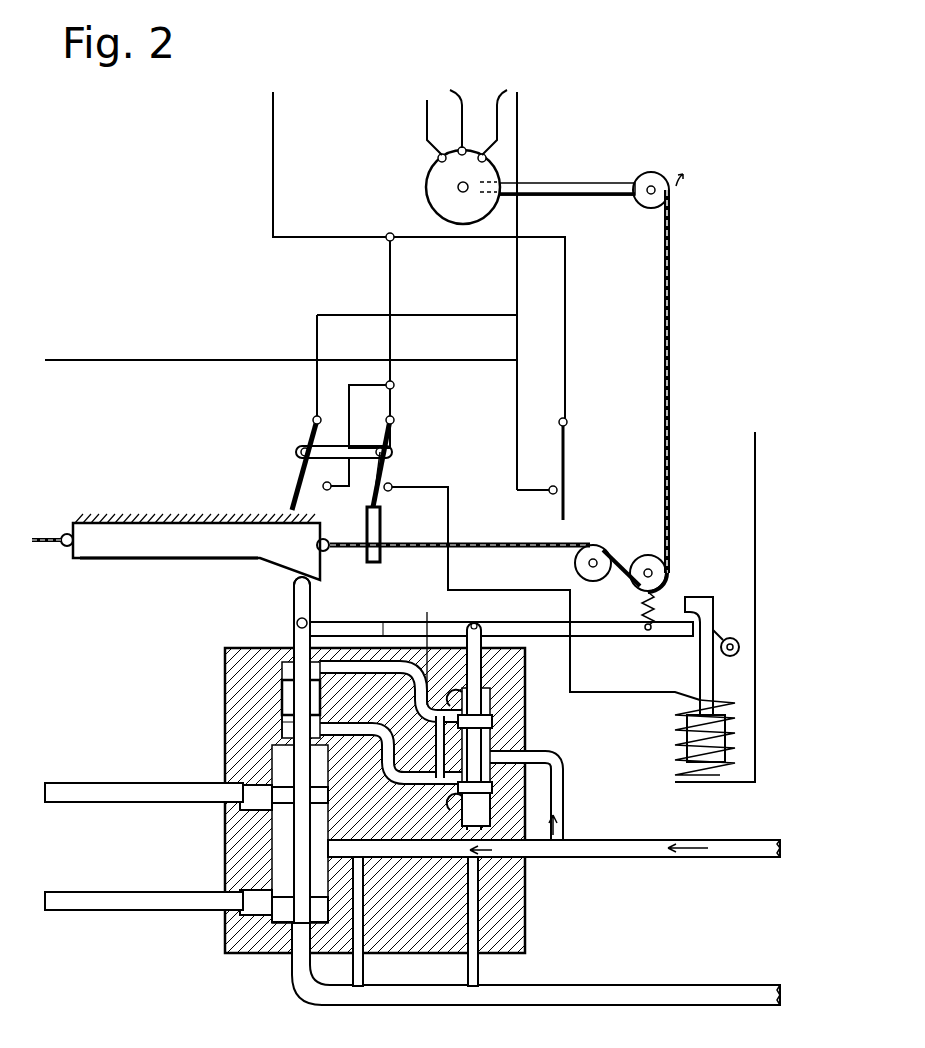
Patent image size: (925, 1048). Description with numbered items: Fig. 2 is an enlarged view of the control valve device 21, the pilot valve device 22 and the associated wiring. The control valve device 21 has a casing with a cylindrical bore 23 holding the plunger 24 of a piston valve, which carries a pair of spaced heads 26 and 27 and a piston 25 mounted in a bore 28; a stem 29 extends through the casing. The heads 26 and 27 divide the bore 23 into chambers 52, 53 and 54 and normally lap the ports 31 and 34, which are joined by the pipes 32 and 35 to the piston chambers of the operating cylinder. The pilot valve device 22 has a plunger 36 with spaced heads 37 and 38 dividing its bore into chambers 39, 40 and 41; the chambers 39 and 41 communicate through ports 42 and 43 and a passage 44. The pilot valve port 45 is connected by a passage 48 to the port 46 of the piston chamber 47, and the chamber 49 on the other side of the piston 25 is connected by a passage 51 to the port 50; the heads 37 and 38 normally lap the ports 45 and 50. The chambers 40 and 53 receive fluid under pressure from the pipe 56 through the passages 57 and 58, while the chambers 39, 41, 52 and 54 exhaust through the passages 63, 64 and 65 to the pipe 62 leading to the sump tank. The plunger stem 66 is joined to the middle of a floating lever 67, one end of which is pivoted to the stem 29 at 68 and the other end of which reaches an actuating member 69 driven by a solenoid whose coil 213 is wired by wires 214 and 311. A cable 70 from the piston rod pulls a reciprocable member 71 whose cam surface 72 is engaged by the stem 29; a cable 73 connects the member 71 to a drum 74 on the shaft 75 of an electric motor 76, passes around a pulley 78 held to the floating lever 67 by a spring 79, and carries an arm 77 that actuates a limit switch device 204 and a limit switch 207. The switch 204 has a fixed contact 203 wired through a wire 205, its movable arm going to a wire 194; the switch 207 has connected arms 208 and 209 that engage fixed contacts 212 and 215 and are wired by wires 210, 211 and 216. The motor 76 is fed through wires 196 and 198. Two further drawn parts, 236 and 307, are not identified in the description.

The wire 196 is at (440, 105).
The conductor 236 is at (501, 108).
The wire 198 is at (427, 120).
The wire 211 is at (517, 120).
The wire 194 is at (273, 190).
The electric motor 76 is at (426, 185).
The shaft 75 is at (580, 183).
The drum 74 is at (651, 172).
The cable 73 is at (670, 363).
The wire 210 is at (390, 282).
The wire 205 is at (246, 360).
The wire 216 is at (366, 390).
The limit switch 207 is at (383, 450).
The switch arm 208 is at (376, 480).
The switch arm 209 is at (298, 493).
The fixed contact 215 is at (333, 490).
The fixed contact 212 is at (391, 491).
The limit switch device 204 is at (563, 470).
The fixed contact 203 is at (553, 494).
The reciprocable member 71 is at (172, 528).
The cable 70 is at (48, 546).
The cam surface 72 is at (182, 560).
The arm 77 is at (381, 556).
The pulley 78 is at (646, 556).
The spring 79 is at (642, 612).
The actuating member 69 is at (703, 597).
The roller 307 is at (736, 639).
The wire 311 is at (755, 520).
The solenoid coil 213 is at (727, 742).
The wire 214 is at (640, 690).
The stem 66 is at (478, 640).
The pivotal connection 68 is at (292, 618).
The stem 29 is at (297, 630).
The port 46 is at (333, 662).
The floating lever 67 is at (383, 622).
The port 45 is at (429, 646).
The control valve device 21 is at (240, 672).
The piston chamber 47 is at (282, 670).
The piston 25 is at (282, 697).
The bore 28 is at (282, 710).
The chamber 49 is at (284, 722).
The passage 48 is at (343, 673).
The port 42 is at (450, 685).
The chamber 39 is at (489, 741).
The head 37 is at (485, 718).
The pilot valve device 22 is at (487, 740).
The chamber 40 is at (495, 750).
The passage 57 is at (563, 772).
The plunger 36 is at (478, 768).
The head 38 is at (478, 790).
The passage 51 is at (391, 736).
The passage 44 is at (440, 752).
The port 50 is at (420, 786).
The port 43 is at (448, 818).
The chamber 41 is at (476, 809).
The head 26 is at (258, 793).
The chamber 52 is at (278, 762).
The port 31 is at (250, 790).
The pipe 32 is at (107, 790).
The plunger 24 is at (262, 817).
The cylindrical bore 23 is at (282, 855).
The chamber 53 is at (280, 872).
The passage 58 is at (430, 858).
The pipe 56 is at (712, 841).
The passage 63 is at (481, 920).
The passage 64 is at (366, 900).
The pipe 62 is at (632, 988).
The passage 65 is at (308, 940).
The port 34 is at (250, 910).
The pipe 35 is at (106, 912).
The head 27 is at (235, 955).
The chamber 54 is at (282, 950).